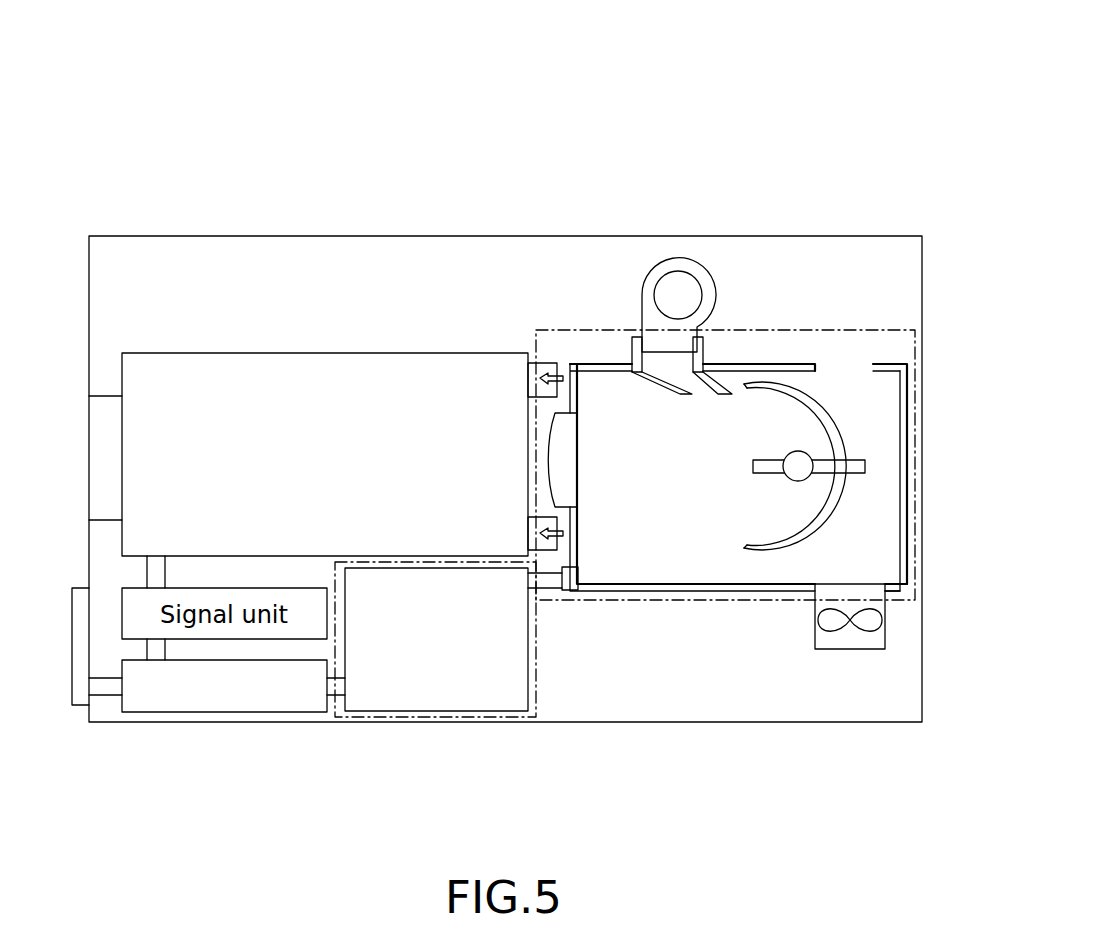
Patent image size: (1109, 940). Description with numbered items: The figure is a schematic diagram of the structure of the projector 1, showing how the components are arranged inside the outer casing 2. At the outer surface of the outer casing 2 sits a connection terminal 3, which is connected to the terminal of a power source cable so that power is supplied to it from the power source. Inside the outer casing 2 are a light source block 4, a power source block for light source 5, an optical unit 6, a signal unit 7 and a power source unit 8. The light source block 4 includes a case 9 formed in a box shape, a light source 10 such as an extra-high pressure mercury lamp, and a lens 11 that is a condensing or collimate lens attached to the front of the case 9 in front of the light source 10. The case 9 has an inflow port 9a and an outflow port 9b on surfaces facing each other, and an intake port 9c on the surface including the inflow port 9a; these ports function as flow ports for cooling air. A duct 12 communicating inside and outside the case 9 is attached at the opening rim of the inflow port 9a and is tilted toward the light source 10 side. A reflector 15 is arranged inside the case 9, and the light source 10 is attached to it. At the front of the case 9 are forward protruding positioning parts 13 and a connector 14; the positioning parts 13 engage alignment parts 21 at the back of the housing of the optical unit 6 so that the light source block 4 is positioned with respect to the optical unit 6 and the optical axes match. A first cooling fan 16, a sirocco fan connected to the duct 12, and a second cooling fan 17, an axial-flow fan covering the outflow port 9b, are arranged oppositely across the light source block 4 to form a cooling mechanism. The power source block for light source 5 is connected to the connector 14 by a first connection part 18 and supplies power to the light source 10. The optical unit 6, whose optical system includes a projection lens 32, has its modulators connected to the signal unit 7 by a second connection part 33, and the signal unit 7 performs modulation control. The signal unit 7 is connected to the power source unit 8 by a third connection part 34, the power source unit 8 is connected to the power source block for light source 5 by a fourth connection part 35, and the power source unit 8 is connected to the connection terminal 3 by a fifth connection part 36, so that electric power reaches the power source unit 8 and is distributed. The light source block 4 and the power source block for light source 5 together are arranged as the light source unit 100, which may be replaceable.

The projector 1 is at (864, 80).
The light source unit 100 is at (882, 328).
The outer casing 2 is at (665, 235).
The connection terminal 3 is at (78, 640).
The light source block 4 is at (755, 490).
The power source block for light source 5 is at (455, 717).
The optical unit 6 is at (297, 353).
The signal unit 7 is at (140, 580).
The power source unit 8 is at (305, 712).
The case 9 is at (766, 382).
The inflow port 9a is at (647, 364).
The outflow port 9b is at (885, 588).
The intake port 9c is at (873, 363).
The light source 10 is at (793, 477).
The lens 11 is at (571, 476).
The duct 12 is at (705, 343).
The positioning parts 13 is at (562, 376).
The connector 14 is at (562, 591).
The reflector 15 is at (840, 488).
The first cooling fan 16 is at (697, 276).
The second cooling fan 17 is at (853, 650).
The first connection part 18 is at (547, 589).
The alignment parts 21 is at (540, 362).
The projection lens 32 is at (100, 445).
The second connection part 33 is at (145, 572).
The third connection part 34 is at (140, 650).
The fourth connection part 35 is at (338, 697).
The fifth connection part 36 is at (100, 697).